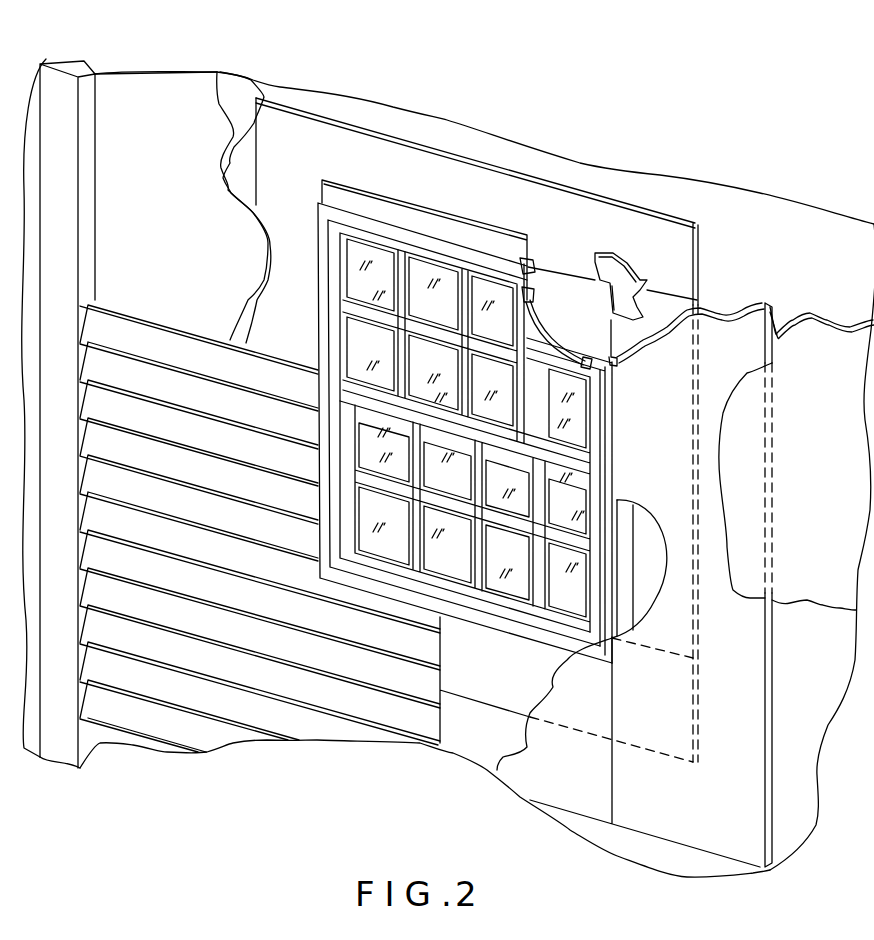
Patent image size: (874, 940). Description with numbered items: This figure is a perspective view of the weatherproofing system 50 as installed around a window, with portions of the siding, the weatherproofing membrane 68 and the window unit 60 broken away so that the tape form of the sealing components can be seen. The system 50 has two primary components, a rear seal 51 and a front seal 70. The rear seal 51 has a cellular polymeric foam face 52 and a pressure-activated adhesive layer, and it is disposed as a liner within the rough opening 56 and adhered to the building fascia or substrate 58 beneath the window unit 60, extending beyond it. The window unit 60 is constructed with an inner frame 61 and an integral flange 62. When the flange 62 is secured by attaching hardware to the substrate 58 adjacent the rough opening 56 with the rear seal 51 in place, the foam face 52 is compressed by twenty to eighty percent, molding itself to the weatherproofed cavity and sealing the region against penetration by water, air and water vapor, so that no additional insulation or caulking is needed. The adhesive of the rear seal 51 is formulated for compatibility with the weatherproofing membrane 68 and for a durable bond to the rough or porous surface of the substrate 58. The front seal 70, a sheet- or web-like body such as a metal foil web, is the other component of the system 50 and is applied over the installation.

The weatherproofing system 50 is at (363, 174).
The rear seal 51 is at (585, 230).
The foam face 52 is at (519, 684).
The rough opening 56 is at (574, 312).
The substrate 58 is at (217, 72).
The window unit 60 is at (333, 258).
The inner frame 61 is at (528, 262).
The integral flange 62 is at (420, 213).
The weatherproofing membrane 68 is at (186, 232).
The front seal 70 is at (743, 328).